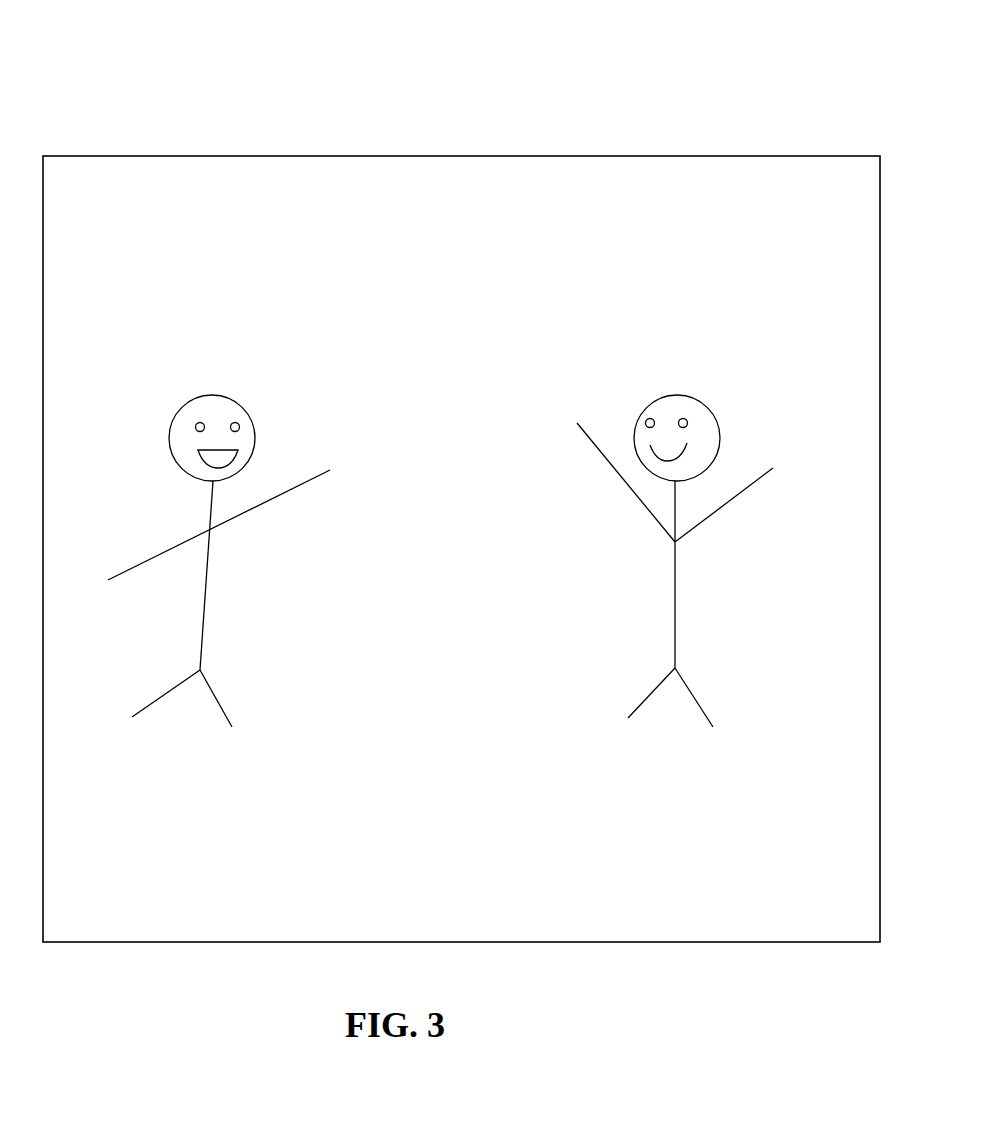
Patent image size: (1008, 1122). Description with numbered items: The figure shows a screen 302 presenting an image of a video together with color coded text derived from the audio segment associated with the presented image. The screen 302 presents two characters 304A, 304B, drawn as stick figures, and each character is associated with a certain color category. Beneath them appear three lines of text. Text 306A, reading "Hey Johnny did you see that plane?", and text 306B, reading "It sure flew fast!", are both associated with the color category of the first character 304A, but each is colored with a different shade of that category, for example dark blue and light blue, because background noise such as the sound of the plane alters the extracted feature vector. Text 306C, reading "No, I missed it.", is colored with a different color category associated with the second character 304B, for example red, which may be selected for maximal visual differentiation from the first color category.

The screen 302 is at (551, 66).
The first character 304A is at (210, 294).
The second character 304B is at (692, 292).
The text 306A is at (566, 775).
The text 306B is at (566, 823).
The text 306C is at (561, 878).